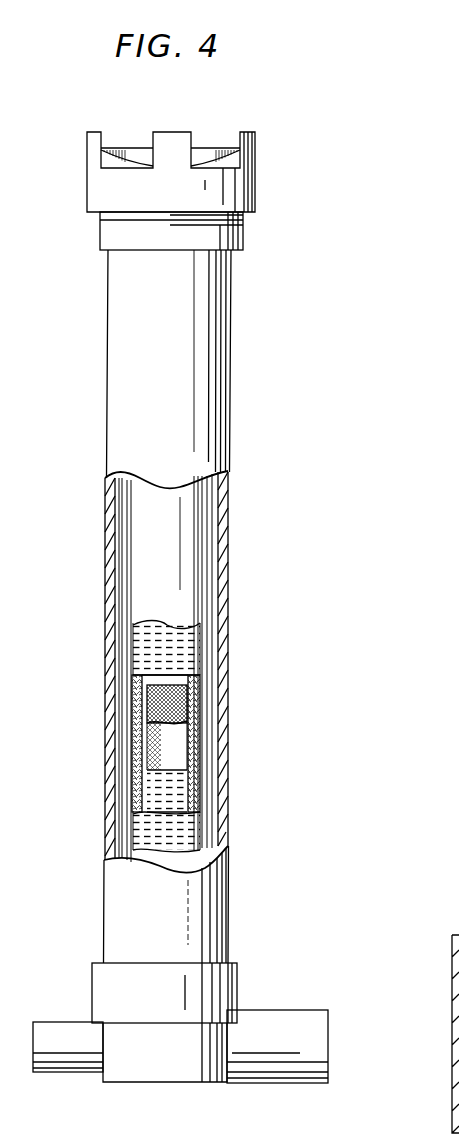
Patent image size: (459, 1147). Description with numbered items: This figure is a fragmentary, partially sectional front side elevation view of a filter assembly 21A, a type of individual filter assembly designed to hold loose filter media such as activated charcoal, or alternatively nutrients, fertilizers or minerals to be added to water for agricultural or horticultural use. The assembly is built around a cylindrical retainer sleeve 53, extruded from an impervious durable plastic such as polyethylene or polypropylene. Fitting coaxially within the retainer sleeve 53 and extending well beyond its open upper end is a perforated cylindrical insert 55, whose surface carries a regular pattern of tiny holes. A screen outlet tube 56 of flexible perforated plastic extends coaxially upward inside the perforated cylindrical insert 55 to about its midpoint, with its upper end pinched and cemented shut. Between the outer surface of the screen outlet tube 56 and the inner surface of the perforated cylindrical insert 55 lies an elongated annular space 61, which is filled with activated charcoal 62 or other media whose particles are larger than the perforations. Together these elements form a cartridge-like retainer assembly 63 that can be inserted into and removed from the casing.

The filter assembly 21A is at (296, 158).
The retainer sleeve 53 is at (190, 566).
The perforated cylindrical insert 55 is at (197, 654).
The screen outlet tube 56 is at (190, 701).
The annular space 61 is at (193, 768).
The activated charcoal 62 is at (198, 800).
The retainer assembly 63 is at (210, 605).